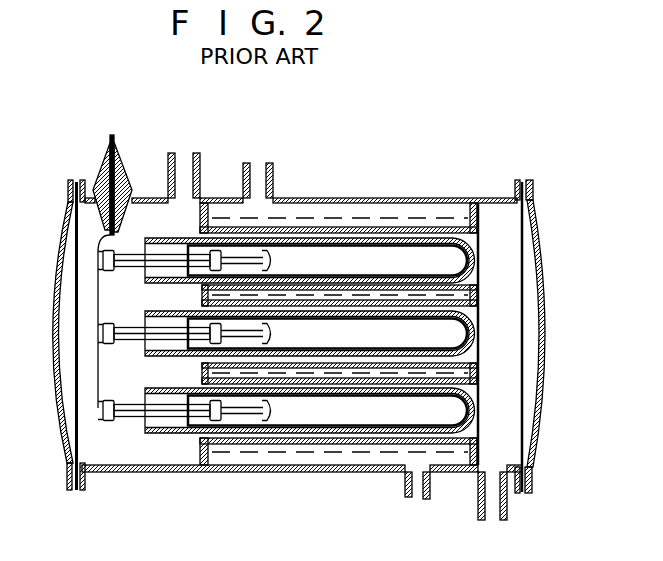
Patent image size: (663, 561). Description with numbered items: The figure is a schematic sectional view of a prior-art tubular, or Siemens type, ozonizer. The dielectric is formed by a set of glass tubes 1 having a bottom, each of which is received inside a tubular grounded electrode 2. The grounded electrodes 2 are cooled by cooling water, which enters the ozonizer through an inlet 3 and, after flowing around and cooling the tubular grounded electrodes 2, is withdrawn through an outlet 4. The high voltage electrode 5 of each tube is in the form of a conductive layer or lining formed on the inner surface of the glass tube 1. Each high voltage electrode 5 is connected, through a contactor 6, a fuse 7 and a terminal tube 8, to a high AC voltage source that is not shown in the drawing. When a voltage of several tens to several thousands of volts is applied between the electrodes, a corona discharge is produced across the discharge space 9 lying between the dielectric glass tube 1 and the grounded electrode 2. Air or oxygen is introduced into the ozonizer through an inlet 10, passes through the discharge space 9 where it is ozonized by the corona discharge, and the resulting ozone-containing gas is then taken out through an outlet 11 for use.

The glass tube 1 is at (405, 240).
The grounded electrode 2 is at (440, 230).
The inlet 3 is at (416, 487).
The outlet 4 is at (258, 166).
The high voltage electrode 5 is at (332, 278).
The contactor 6 is at (262, 430).
The fuse 7 is at (128, 408).
The terminal tube 8 is at (124, 166).
The discharge space 9 is at (370, 240).
The inlet 10 is at (186, 160).
The outlet 11 is at (494, 512).